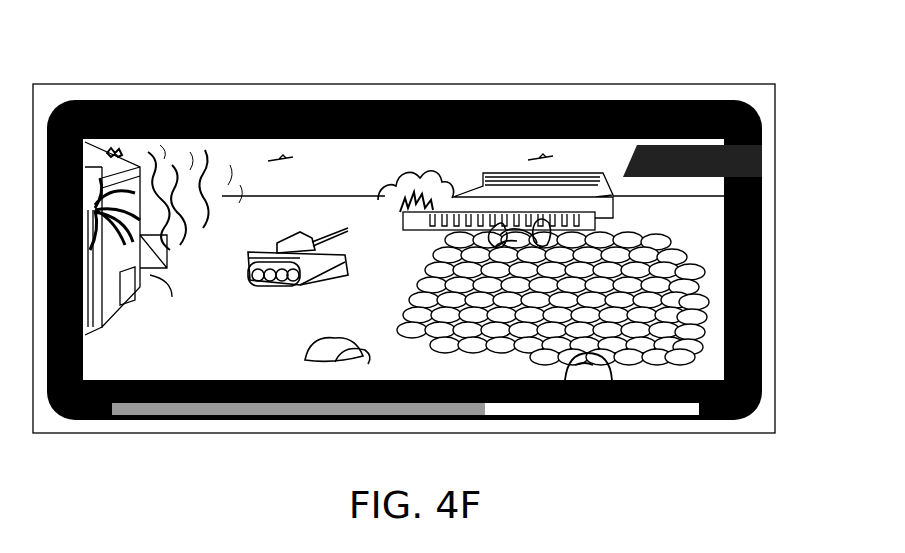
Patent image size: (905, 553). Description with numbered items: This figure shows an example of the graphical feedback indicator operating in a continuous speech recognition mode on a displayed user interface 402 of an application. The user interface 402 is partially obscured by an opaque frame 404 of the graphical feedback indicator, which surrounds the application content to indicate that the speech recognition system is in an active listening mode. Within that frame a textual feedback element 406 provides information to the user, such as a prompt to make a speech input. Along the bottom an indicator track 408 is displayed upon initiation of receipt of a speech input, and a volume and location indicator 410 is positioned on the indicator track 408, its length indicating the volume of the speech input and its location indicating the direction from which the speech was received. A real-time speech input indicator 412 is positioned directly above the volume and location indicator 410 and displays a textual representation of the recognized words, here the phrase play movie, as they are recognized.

The user interface 402 is at (562, 82).
The display screen 404 is at (223, 90).
The textual feedback element 406 is at (774, 157).
The indicator track 408 is at (311, 426).
The volume and location indicator 410 is at (563, 424).
The real-time speech input indicator 412 is at (634, 424).